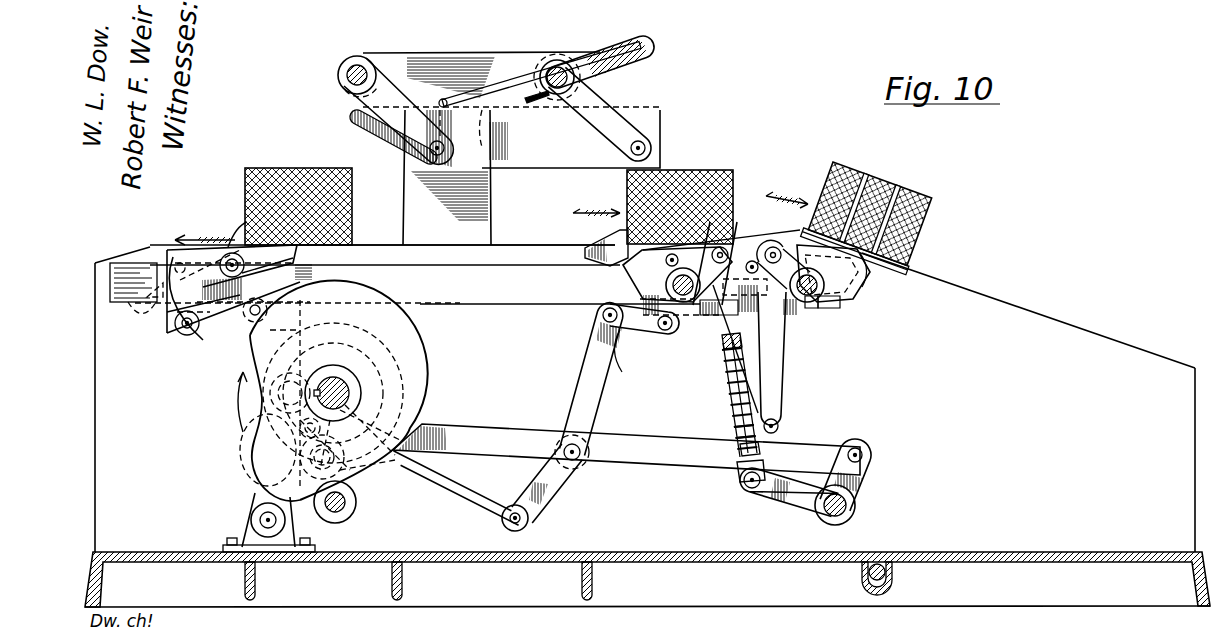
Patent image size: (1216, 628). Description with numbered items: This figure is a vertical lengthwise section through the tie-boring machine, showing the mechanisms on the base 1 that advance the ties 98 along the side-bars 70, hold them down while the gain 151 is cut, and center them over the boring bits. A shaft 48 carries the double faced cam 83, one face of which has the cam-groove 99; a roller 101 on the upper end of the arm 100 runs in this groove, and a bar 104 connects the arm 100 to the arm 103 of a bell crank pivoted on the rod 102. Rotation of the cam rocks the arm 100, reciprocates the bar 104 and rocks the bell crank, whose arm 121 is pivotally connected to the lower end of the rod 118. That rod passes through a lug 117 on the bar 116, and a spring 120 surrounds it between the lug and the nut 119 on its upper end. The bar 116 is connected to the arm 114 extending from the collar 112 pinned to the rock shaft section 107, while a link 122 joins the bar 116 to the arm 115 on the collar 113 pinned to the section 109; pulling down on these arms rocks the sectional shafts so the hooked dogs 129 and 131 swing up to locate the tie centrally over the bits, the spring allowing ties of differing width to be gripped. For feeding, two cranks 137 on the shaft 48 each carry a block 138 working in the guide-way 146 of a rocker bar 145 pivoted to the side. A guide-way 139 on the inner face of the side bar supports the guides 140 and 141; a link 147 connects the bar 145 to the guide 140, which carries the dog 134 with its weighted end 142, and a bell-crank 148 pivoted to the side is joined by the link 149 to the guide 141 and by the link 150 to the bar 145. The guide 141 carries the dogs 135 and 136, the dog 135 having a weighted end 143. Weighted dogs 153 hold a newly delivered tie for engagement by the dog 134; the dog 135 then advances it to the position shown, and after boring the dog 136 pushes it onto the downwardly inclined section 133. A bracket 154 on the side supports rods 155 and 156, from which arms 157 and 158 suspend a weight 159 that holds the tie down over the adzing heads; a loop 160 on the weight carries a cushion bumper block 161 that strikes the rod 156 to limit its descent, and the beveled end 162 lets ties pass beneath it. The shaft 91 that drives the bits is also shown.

The base 1 is at (778, 612).
The shaft 48 is at (345, 392).
The side-bars 70 is at (532, 239).
The double faced cam 83 is at (418, 324).
The shaft 91 is at (882, 561).
The tie 98 is at (300, 169).
The cam-groove 99 is at (277, 452).
The arm 100 is at (257, 490).
The roller 101 is at (272, 393).
The rod 102 is at (833, 523).
The arm of bell crank 103 is at (868, 476).
The bar 104 is at (665, 441).
The rock shaft section 107 is at (683, 310).
The rock shaft section 109 is at (808, 302).
The collar 112 is at (660, 331).
The collar 113 is at (830, 306).
The arm 114 is at (724, 248).
The arm 115 is at (773, 247).
The bar 116 is at (727, 381).
The lug 117 is at (739, 451).
The rod 118 is at (726, 338).
The nut 119 is at (728, 356).
The spring 120 is at (735, 406).
The arm of bell-crank 121 is at (777, 502).
The link 122 is at (783, 386).
The hooked dog 129 is at (628, 275).
The hooked dog 131 is at (864, 282).
The downwardly inclined section 133 is at (1002, 304).
The dog 134 is at (294, 258).
The dog 135 is at (612, 242).
The dog 136 is at (807, 206).
The crank 137 is at (369, 471).
The block 138 is at (360, 485).
The guide-way 139 is at (417, 274).
The guide 140 is at (247, 292).
The guide 141 is at (808, 302).
The weighted end 142 is at (204, 275).
The weighted end 143 is at (723, 300).
The rocker bar 145 is at (344, 522).
The guide-way 146 is at (283, 331).
The link 147 is at (207, 327).
The bell-crank 148 is at (598, 409).
The link 149 is at (633, 356).
The link 150 is at (460, 491).
The gain 151 is at (727, 235).
The dog 153 is at (232, 228).
The bracket 154 is at (484, 196).
The rod 155 is at (340, 84).
The rod 156 is at (557, 58).
The arm 157 is at (357, 103).
The arm 158 is at (609, 98).
The weight 159 is at (570, 139).
The loop 160 is at (610, 38).
The cushion bumper block 161 is at (658, 48).
The beveled end 162 is at (388, 141).